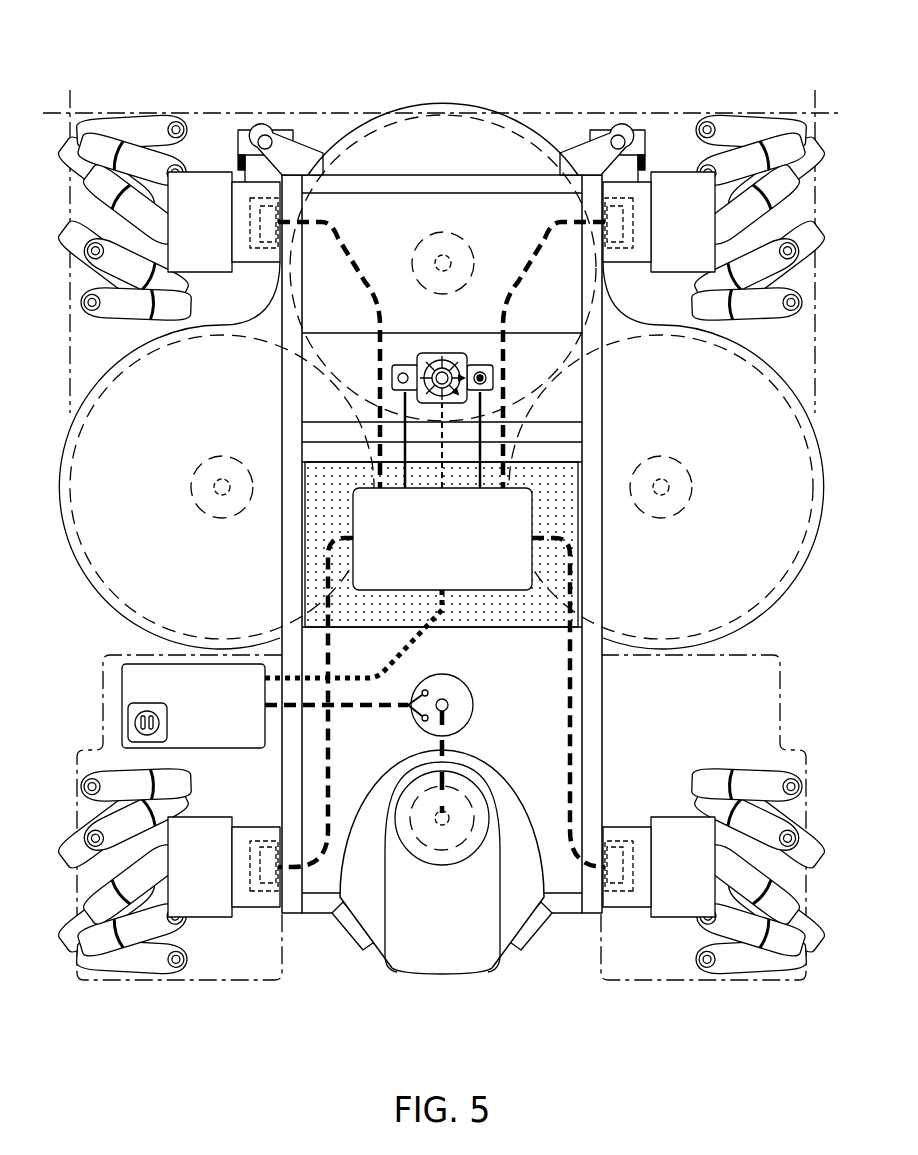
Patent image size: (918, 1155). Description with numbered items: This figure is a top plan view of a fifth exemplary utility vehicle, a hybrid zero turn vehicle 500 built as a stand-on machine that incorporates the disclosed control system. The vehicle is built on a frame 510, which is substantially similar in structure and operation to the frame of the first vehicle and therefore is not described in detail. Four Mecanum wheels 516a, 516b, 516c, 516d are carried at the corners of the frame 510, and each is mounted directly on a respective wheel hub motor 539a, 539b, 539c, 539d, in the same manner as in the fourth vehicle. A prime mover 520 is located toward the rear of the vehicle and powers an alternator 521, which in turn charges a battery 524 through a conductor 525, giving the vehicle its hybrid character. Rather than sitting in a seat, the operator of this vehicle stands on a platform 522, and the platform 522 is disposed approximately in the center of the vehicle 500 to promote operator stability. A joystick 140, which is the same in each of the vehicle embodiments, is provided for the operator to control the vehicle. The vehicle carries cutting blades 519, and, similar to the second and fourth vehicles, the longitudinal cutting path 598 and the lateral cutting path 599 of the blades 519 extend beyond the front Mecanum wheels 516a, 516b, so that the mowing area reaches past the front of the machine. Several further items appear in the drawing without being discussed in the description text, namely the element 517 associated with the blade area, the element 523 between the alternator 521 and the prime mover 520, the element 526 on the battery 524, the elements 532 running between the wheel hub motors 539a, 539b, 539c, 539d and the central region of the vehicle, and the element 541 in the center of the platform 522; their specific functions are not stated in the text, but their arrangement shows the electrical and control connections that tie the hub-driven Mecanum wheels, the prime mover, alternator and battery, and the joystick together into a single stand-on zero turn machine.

The hybrid zero turn vehicle 500 is at (258, 78).
The frame 510 is at (281, 427).
The Mecanum wheel 516a is at (152, 123).
The Mecanum wheel 516b is at (732, 123).
The Mecanum wheel 516c is at (153, 963).
The Mecanum wheel 516d is at (732, 963).
The top plate 517 is at (442, 102).
The blades 519 is at (525, 138).
The prime mover 520 is at (424, 925).
The alternator 521 is at (457, 690).
The platform 522 is at (472, 629).
The motor cable 523 is at (447, 745).
The battery 524 is at (192, 703).
The conductor 525 is at (370, 709).
The charging port 526 is at (168, 723).
The wheel motor cable 532 is at (380, 590).
The wheel hub motor 539a is at (176, 218).
The wheel hub motor 539b is at (659, 218).
The wheel hub motor 539c is at (176, 890).
The wheel hub motor 539d is at (659, 890).
The controller 541 is at (438, 475).
The joystick 140 is at (447, 352).
The longitudinal cutting path 598 is at (71, 93).
The lateral cutting path 599 is at (307, 112).